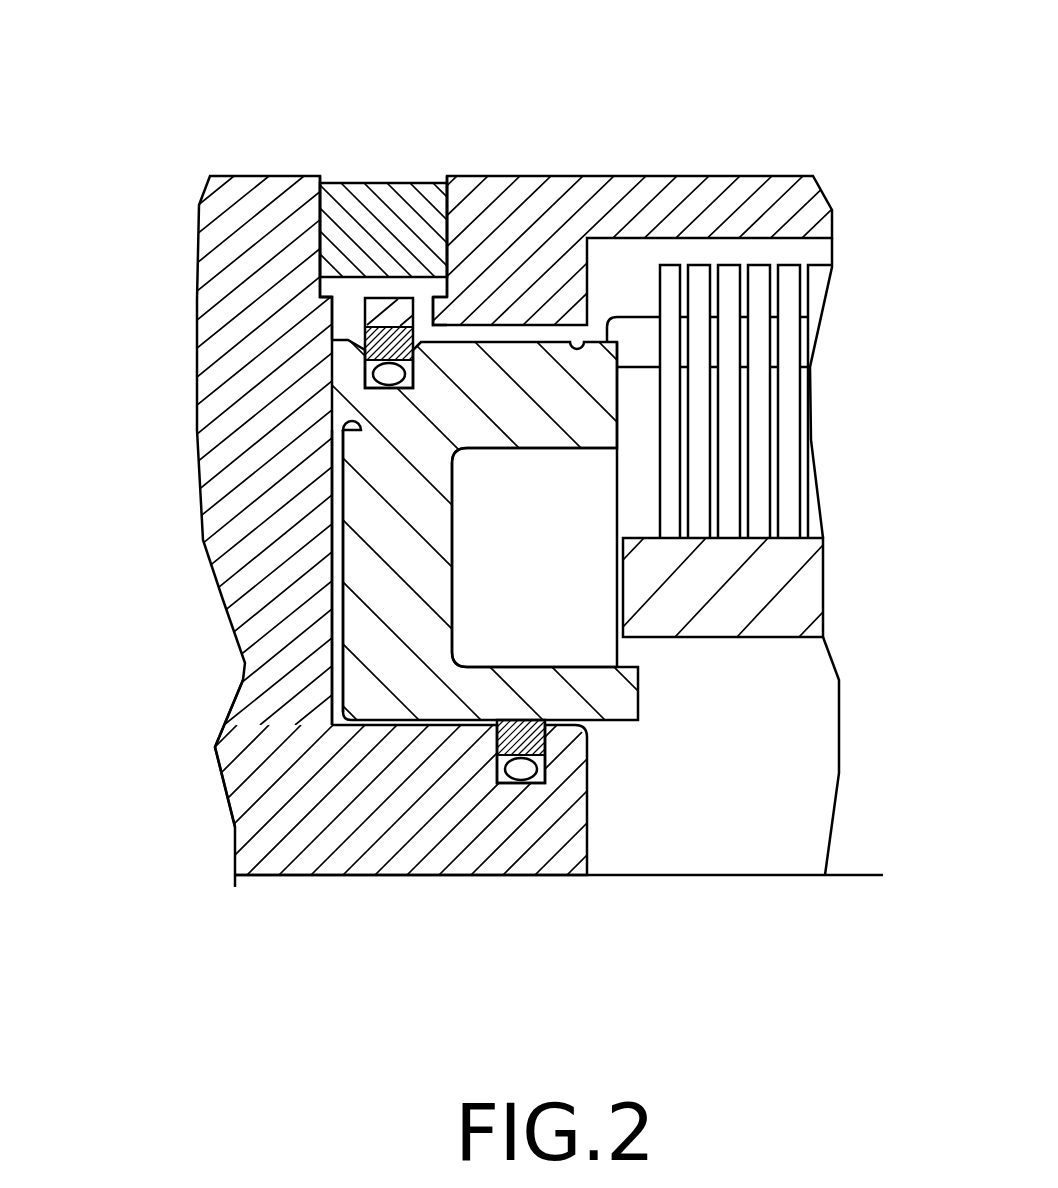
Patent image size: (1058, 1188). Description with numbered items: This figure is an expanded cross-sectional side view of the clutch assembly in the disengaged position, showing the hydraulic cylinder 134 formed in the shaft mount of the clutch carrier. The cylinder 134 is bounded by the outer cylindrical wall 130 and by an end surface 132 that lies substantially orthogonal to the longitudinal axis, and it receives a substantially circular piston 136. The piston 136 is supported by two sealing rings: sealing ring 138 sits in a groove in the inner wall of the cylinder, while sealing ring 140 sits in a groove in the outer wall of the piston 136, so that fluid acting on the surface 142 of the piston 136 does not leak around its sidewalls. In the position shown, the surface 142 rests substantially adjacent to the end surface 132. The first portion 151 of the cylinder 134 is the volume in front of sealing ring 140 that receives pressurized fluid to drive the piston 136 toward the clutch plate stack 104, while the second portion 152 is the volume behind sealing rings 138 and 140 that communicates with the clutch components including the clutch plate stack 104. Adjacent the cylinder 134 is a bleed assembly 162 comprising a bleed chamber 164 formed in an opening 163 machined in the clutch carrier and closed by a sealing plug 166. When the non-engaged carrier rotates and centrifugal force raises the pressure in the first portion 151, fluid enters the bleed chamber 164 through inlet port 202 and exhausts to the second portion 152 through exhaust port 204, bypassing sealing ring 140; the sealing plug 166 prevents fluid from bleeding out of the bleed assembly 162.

The clutch plate stack 104 is at (732, 267).
The outer cylindrical wall 130 is at (510, 327).
The end surface 132 is at (357, 405).
The hydraulic cylinder 134 is at (243, 710).
The piston 136 is at (370, 700).
The sealing ring 138 is at (497, 747).
The sealing ring 140 is at (378, 348).
The surface of piston 142 is at (345, 555).
The first portion of cylinder 151 is at (337, 475).
The second portion of cylinder 152 is at (553, 333).
The bleed assembly 162 is at (374, 125).
The opening 163 is at (343, 183).
The bleed chamber 164 is at (255, 195).
The sealing plug 166 is at (427, 193).
The inlet port 202 is at (330, 312).
The exhaust port 204 is at (433, 312).